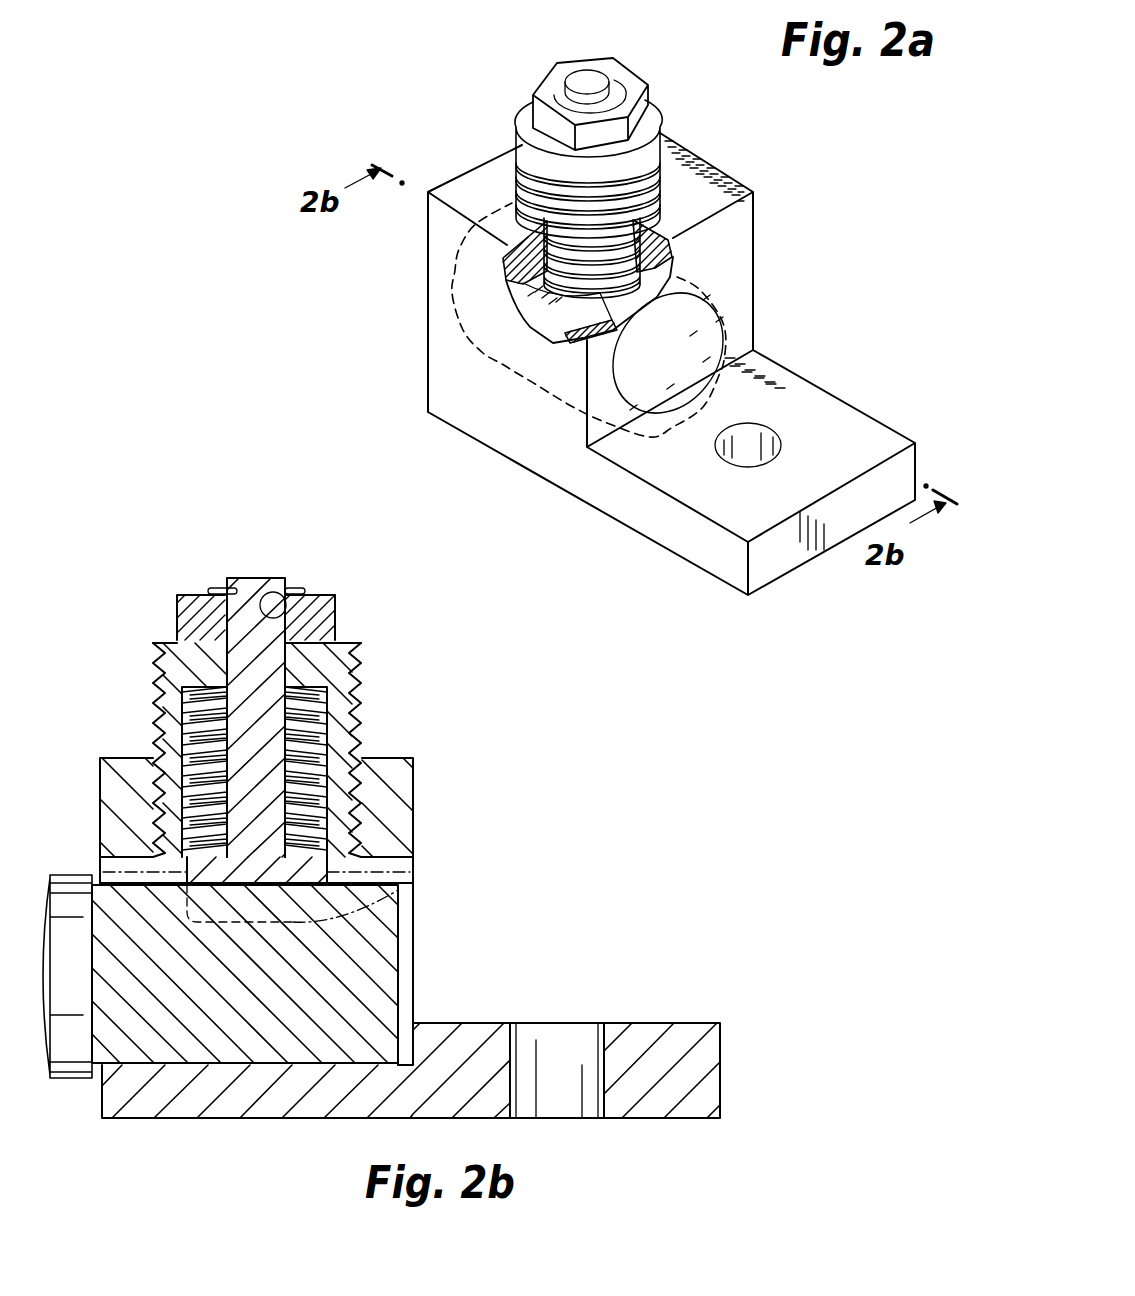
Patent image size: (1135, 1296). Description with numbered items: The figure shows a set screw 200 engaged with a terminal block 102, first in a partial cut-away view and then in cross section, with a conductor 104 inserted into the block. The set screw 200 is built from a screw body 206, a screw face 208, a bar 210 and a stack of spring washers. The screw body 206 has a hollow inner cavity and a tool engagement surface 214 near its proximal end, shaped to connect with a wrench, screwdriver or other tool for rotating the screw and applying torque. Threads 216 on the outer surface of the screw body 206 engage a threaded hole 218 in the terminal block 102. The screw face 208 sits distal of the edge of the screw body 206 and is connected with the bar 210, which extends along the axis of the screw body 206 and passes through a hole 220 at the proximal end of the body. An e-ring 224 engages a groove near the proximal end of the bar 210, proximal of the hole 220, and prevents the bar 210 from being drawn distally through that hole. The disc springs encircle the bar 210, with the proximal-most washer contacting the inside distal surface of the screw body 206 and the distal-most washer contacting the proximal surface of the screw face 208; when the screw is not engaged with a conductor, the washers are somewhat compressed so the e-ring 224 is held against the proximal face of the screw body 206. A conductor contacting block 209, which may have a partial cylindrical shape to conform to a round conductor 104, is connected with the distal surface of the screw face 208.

In FIG. 2A, the terminal block 102 is at (827, 360).
In FIG. 2B, the terminal block 102 is at (588, 1004).
In FIG. 2B, the conductor 104 is at (385, 975).
In FIG. 2A, the set screw 200 is at (510, 108).
In FIG. 2B, the set screw 200 is at (267, 688).
In FIG. 2B, the screw body 206 is at (288, 723).
In FIG. 2B, the screw face 208 is at (312, 875).
In FIG. 2A, the conductor contacting block 209 is at (545, 308).
In FIG. 2B, the conductor contacting block 209 is at (400, 887).
In FIG. 2B, the bar 210 is at (248, 580).
In FIG. 2B, the tool engagement surface 214 is at (178, 605).
In FIG. 2B, the threads 216 is at (362, 737).
In FIG. 2B, the threaded hole 218 is at (403, 768).
In FIG. 2B, the hole 220 is at (262, 598).
In FIG. 2B, the e-ring 224 is at (215, 588).